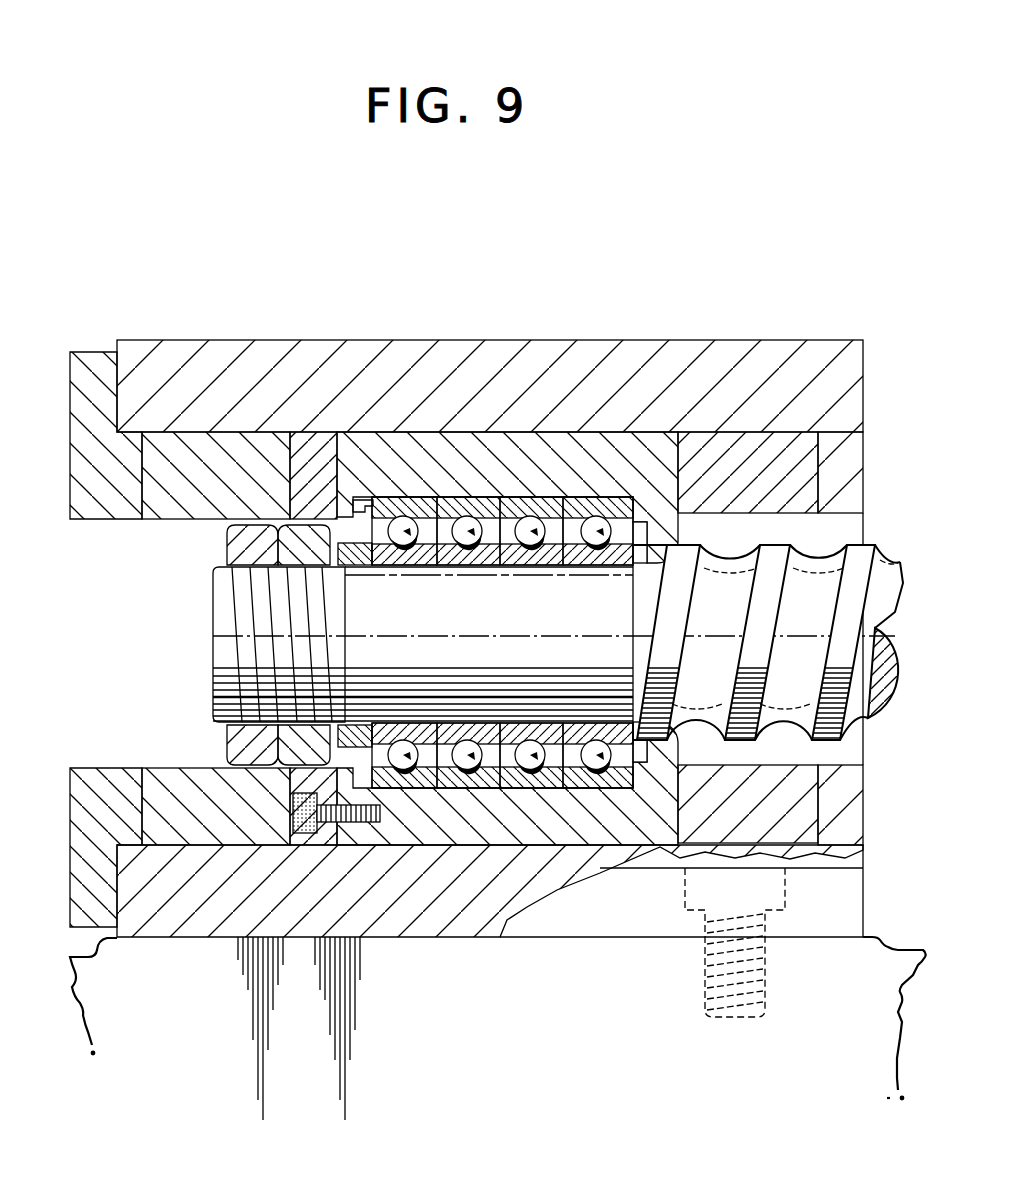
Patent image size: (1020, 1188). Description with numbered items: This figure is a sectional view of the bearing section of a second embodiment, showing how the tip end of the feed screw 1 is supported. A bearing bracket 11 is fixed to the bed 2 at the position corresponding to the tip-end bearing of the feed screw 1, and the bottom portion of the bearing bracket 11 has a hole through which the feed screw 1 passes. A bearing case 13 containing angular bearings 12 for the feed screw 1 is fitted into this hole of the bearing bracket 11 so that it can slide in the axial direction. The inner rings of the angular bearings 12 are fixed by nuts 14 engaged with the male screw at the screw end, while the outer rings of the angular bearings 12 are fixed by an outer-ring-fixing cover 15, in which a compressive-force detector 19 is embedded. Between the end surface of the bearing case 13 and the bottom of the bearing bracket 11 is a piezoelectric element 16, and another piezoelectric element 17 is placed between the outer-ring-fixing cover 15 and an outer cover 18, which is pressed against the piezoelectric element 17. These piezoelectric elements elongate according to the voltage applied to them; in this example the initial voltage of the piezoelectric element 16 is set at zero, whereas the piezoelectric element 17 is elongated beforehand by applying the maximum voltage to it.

The feed screw 1 is at (882, 552).
The bed 2 is at (817, 988).
The bearing bracket 11 is at (766, 360).
The angular bearings 12 is at (550, 503).
The bearing case 13 is at (533, 453).
The nuts 14 is at (228, 748).
The outer-ring-fixing cover 15 is at (318, 453).
The piezoelectric element 16 is at (797, 462).
The piezoelectric element 17 is at (230, 455).
The outer cover 18 is at (98, 368).
The compressive-force detector 19 is at (370, 500).